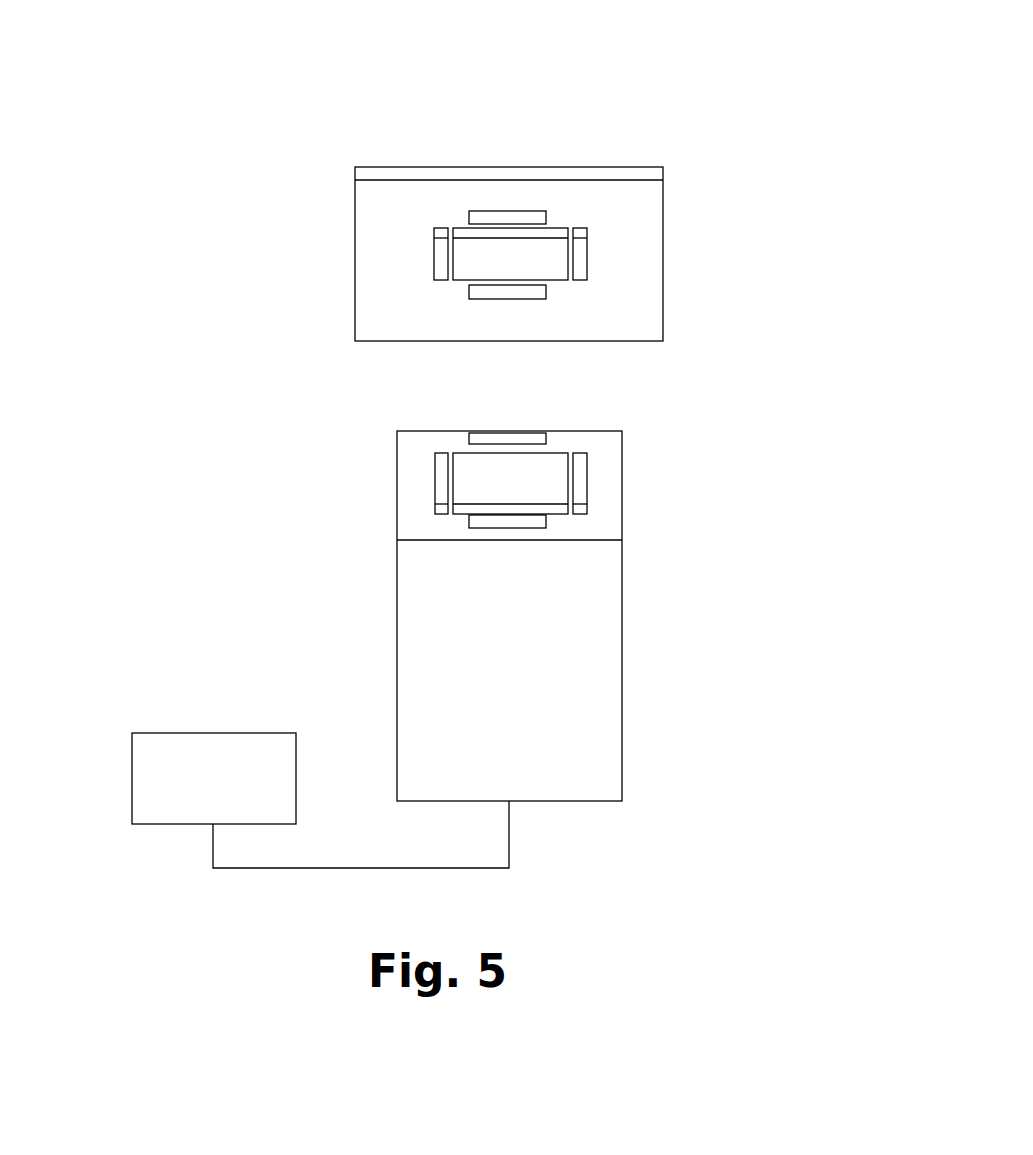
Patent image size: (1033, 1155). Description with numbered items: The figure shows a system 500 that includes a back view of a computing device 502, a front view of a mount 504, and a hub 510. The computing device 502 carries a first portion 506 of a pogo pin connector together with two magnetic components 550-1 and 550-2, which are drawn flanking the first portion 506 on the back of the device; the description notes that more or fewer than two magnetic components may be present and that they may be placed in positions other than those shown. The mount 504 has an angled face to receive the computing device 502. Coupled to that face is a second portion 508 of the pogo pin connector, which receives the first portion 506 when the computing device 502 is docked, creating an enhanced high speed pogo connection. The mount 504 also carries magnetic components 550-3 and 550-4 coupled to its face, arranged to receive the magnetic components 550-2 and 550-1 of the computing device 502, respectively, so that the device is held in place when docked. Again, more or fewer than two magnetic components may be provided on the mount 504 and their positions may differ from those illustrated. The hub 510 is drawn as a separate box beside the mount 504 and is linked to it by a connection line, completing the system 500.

The system 500 is at (647, 72).
The computing device 502 is at (663, 250).
The mount 504 is at (622, 612).
The first portion of a pogo pin connector 506 is at (510, 228).
The second portion of the pogo pin connector 508 is at (511, 453).
The hub 510 is at (132, 779).
The magnetic component 550-1 is at (441, 228).
The magnetic component 550-2 is at (579, 228).
The magnetic component 550-3 is at (446, 453).
The magnetic component 550-4 is at (581, 453).